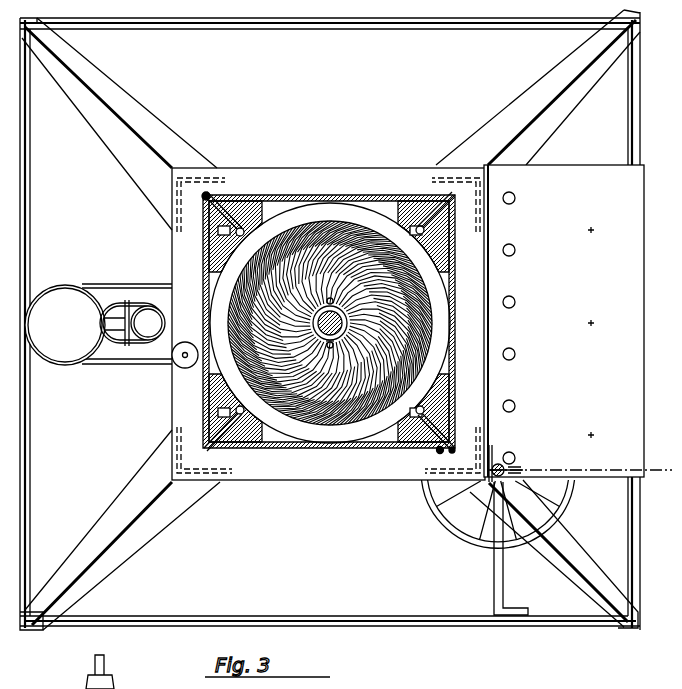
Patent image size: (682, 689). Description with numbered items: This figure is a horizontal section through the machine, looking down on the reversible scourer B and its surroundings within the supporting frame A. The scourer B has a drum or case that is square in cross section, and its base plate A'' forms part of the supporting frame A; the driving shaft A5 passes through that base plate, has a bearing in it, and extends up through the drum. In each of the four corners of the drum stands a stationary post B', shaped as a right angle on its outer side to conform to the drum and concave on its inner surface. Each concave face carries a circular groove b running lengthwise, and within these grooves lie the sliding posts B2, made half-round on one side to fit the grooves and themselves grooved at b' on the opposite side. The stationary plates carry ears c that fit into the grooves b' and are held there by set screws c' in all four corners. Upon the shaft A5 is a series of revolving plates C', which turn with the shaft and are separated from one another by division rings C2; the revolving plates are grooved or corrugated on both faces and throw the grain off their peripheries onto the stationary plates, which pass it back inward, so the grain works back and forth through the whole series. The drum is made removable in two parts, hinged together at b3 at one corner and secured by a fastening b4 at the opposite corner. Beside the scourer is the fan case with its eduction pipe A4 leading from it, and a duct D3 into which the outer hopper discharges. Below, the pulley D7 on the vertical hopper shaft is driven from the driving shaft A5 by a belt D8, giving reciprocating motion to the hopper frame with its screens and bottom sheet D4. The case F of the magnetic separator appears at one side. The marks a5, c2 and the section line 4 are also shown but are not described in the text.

The supporting frame A is at (330, 320).
The base plate A'' is at (328, 324).
The eduction pipe A4 is at (98, 324).
The driving shaft A5 is at (312, 323).
The hub pin a5 is at (327, 316).
The reversible scourer B is at (329, 332).
The stationary posts B' is at (329, 321).
The sliding posts B2 is at (216, 232).
The circular grooves b is at (336, 321).
The grooves b' is at (328, 325).
The hinge b3 is at (214, 190).
The fastening b4 is at (446, 457).
The revolving plates C' is at (330, 323).
The division rings C2 is at (460, 313).
The ears c is at (185, 368).
The set screws c' is at (330, 320).
The hub key c2 is at (331, 350).
The duct D3 is at (132, 323).
The bottom sheet D4 is at (496, 484).
The pulley D7 is at (498, 511).
The belt D8 is at (420, 492).
The case F is at (573, 321).
The section line 4 is at (569, 469).